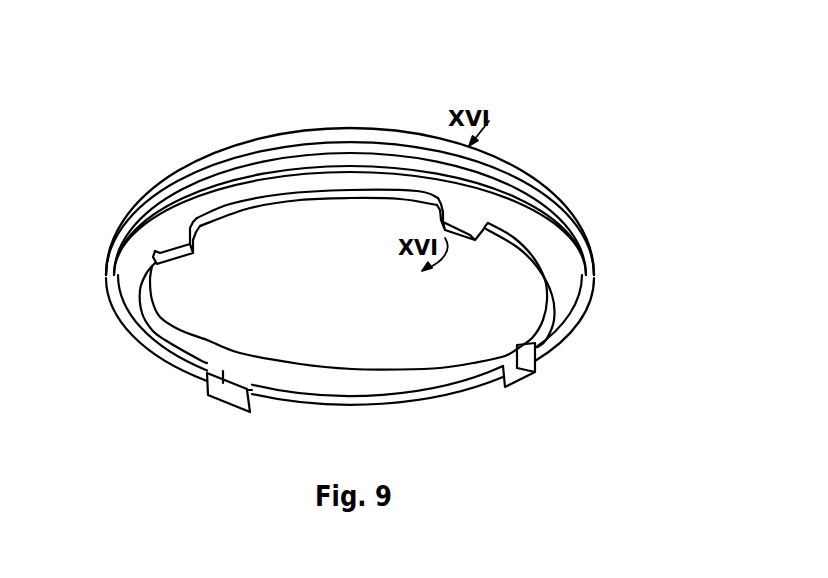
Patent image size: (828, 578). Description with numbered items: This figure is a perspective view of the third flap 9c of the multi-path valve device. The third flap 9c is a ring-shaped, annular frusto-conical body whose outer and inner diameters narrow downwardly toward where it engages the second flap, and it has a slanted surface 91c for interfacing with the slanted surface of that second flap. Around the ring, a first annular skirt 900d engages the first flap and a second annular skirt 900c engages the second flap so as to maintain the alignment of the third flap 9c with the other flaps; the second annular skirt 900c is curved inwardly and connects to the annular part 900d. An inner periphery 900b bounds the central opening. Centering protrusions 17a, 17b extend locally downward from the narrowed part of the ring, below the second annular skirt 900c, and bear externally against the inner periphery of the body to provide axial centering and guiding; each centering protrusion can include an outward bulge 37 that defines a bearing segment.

The third flap 9c is at (406, 258).
The inner periphery 900b is at (387, 382).
The second annular skirt 900c is at (463, 217).
The first annular skirt 900d is at (577, 222).
The slanted surface 91c is at (328, 176).
The outward bulge 37 is at (192, 256).
The centering protrusion 17a is at (540, 358).
The centering protrusion 17b is at (205, 386).